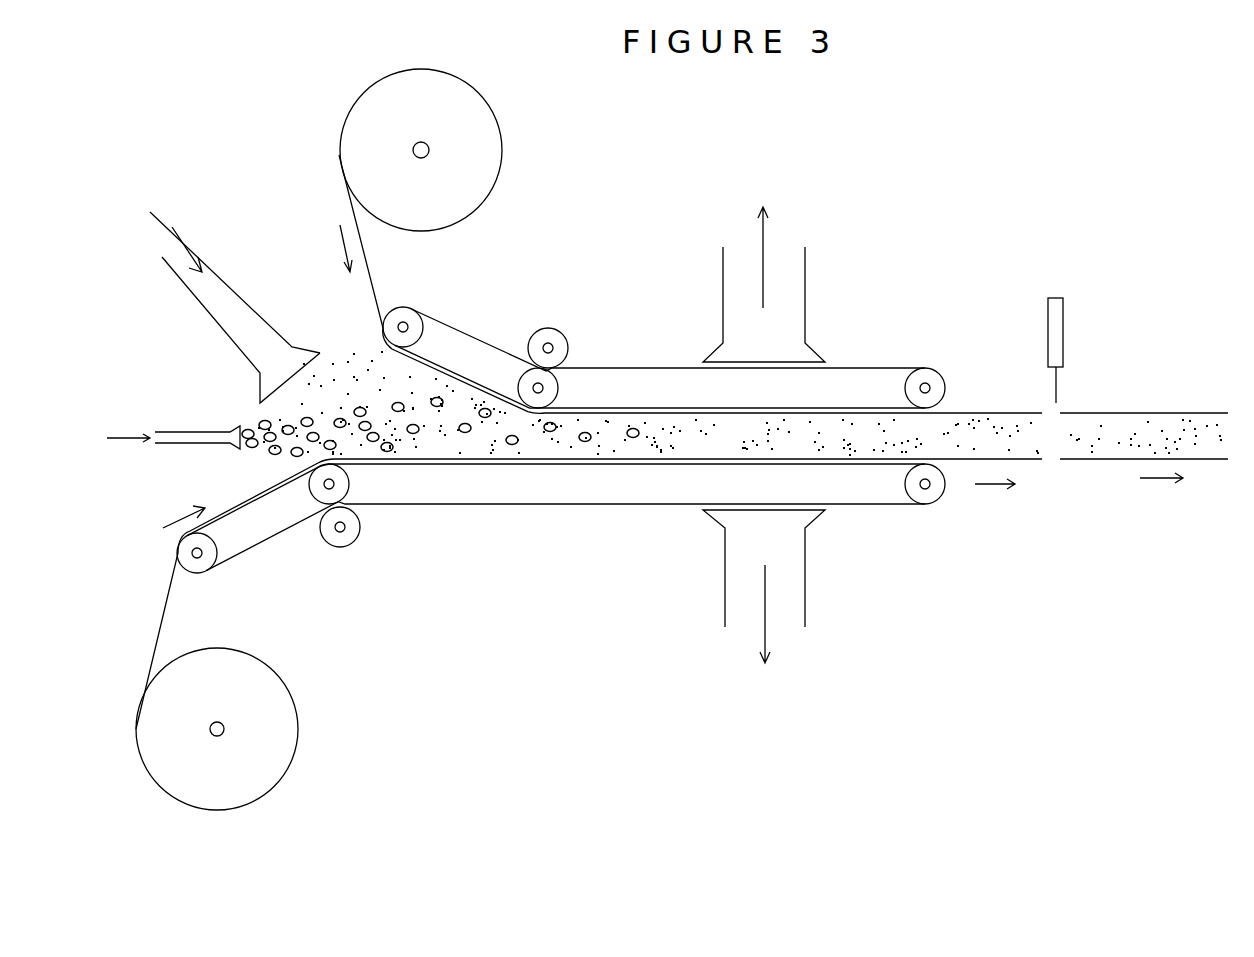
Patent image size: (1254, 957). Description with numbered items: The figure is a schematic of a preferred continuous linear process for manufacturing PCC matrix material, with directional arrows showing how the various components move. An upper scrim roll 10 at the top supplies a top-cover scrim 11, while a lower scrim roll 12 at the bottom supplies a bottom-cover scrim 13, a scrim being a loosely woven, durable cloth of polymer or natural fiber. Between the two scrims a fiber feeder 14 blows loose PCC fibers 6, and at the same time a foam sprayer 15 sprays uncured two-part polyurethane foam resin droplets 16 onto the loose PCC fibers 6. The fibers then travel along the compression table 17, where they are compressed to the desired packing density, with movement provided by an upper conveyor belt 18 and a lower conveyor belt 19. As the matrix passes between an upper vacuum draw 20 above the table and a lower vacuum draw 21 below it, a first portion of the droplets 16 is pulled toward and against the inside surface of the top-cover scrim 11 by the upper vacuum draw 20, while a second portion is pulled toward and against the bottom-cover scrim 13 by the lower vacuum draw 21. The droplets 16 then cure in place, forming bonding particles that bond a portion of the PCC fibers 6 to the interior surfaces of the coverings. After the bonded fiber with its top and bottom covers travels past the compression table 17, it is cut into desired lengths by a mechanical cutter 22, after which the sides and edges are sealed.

The loose PCC fibers 6 is at (350, 357).
The upper scrim roll 10 is at (468, 195).
The top-cover scrim 11 is at (355, 212).
The lower scrim roll 12 is at (275, 707).
The bottom-cover scrim 13 is at (170, 608).
The fiber feeder 14 is at (235, 297).
The foam sprayer 15 is at (188, 437).
The uncured two-part polyurethane foam resin droplets 16 is at (277, 455).
The compression table 17 is at (647, 388).
The upper conveyor belt 18 is at (878, 370).
The lower conveyor belt 19 is at (878, 503).
The upper vacuum draw 20 is at (795, 280).
The lower vacuum draw 21 is at (730, 575).
The mechanical cutter 22 is at (1060, 320).